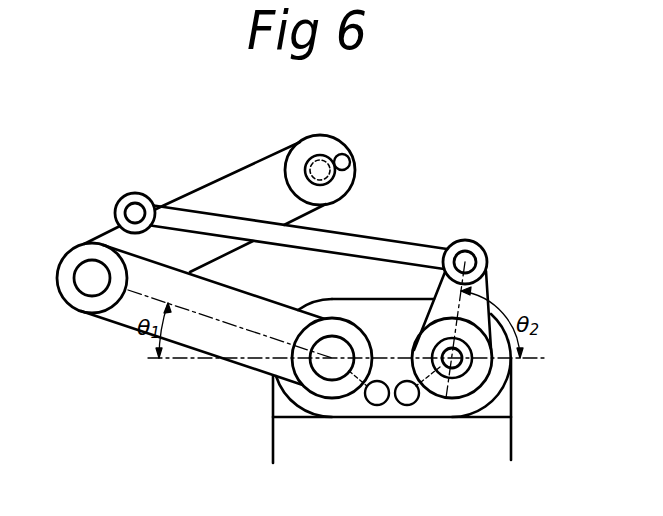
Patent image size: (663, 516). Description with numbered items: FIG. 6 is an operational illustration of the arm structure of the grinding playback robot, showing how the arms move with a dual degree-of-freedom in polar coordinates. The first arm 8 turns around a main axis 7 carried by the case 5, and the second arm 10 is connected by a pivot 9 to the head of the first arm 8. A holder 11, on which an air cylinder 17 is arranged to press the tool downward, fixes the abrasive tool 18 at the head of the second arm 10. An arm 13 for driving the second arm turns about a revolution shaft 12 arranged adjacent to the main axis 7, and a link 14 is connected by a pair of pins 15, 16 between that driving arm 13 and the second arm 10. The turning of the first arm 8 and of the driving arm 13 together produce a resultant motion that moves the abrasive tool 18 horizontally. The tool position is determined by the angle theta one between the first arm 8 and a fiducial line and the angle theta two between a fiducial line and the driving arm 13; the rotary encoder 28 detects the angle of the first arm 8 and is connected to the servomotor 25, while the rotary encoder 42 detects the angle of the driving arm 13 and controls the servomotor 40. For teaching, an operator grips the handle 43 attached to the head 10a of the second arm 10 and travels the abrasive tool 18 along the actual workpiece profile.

The case 5 is at (393, 418).
The main axis 7 is at (333, 374).
The No.1 arm 8 is at (200, 347).
The pivot 9 is at (82, 288).
The No.2 arm 10 is at (205, 192).
The head of No.2 arm 10a is at (350, 190).
The holder 11 is at (325, 158).
The revolution shaft 12 is at (465, 362).
The arm for driving No.2 arm 13 is at (482, 307).
The link 14 is at (405, 243).
The pin 15 is at (477, 250).
The pin 16 is at (132, 206).
The air cylinder 17 is at (305, 162).
The abrasive tool 18 is at (325, 158).
The servomotor 25 is at (293, 392).
The rotary encoder 28 is at (369, 402).
The servomotor 40 is at (463, 390).
The rotary encoder 42 is at (413, 403).
The handle 43 is at (350, 160).